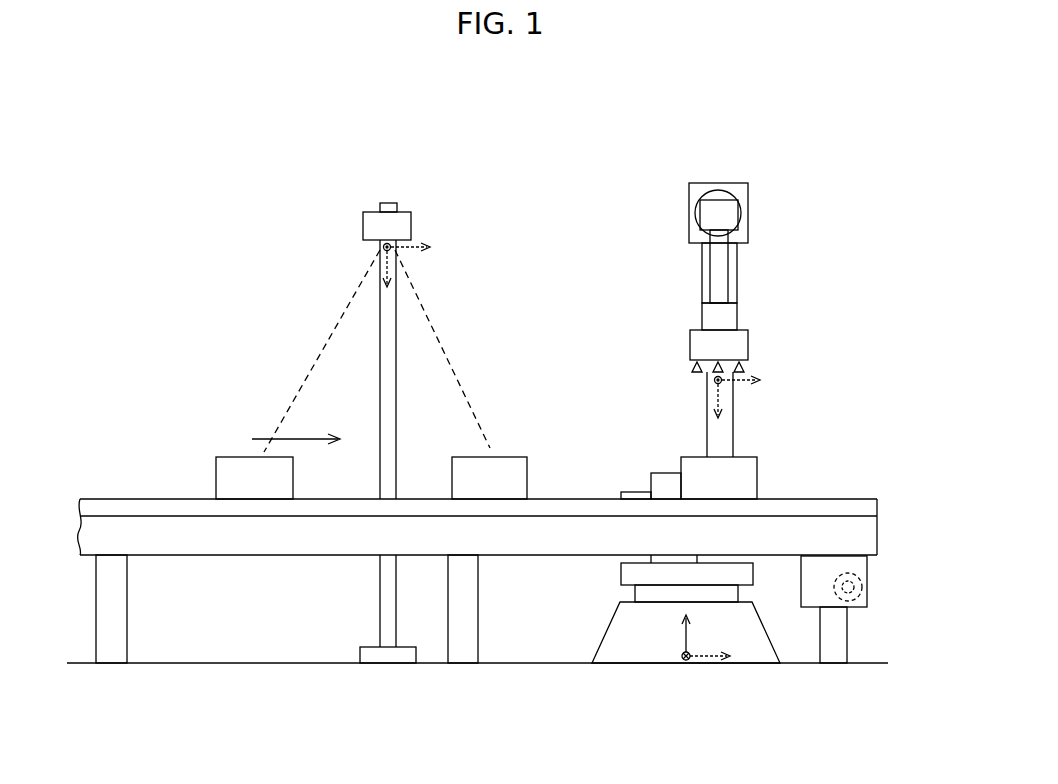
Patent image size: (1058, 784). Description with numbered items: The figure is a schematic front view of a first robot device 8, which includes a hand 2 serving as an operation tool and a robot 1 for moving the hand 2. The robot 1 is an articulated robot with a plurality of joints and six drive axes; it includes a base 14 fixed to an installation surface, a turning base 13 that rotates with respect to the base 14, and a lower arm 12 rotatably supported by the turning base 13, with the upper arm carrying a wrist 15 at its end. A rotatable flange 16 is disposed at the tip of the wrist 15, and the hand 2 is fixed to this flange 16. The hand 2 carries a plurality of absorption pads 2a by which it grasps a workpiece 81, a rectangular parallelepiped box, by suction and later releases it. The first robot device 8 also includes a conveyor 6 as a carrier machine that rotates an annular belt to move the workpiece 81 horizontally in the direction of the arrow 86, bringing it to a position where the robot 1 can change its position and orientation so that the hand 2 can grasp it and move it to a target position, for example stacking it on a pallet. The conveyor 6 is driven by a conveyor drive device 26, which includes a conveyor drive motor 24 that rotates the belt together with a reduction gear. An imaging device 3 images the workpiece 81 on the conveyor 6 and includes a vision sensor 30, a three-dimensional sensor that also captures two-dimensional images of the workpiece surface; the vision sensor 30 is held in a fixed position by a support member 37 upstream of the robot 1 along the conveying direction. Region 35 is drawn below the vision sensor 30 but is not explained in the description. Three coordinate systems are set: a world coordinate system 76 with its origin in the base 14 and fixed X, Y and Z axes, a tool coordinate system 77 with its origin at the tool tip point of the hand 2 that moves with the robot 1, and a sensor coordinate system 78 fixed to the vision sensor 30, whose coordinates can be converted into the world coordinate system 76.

The robot 1 is at (677, 423).
The hand 2 is at (686, 363).
The absorption pads 2a is at (697, 368).
The imaging device 3 is at (401, 210).
The conveyor 6 is at (167, 556).
The first robot device 8 is at (680, 371).
The lower arm 12 is at (710, 400).
The turning base 13 is at (633, 573).
The base 14 is at (620, 628).
The wrist 15 is at (719, 270).
The flange 16 is at (722, 316).
The conveyor drive motor 24 is at (867, 590).
The conveyor drive device 26 is at (867, 567).
The vision sensor 30 is at (372, 220).
The imaging range 35 is at (440, 342).
The support member 37 is at (399, 415).
The world coordinate system 76 is at (700, 665).
The tool coordinate system 77 is at (740, 385).
The sensor coordinate system 78 is at (410, 241).
The workpiece 81 is at (233, 463).
The arrow 86 is at (305, 431).